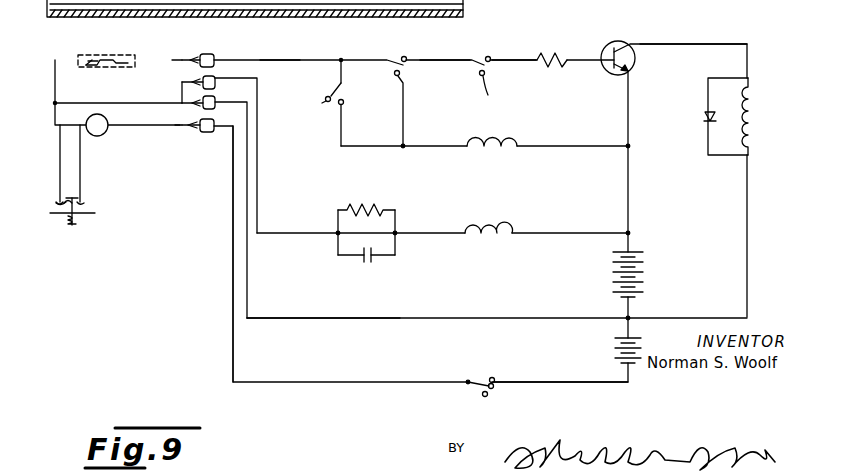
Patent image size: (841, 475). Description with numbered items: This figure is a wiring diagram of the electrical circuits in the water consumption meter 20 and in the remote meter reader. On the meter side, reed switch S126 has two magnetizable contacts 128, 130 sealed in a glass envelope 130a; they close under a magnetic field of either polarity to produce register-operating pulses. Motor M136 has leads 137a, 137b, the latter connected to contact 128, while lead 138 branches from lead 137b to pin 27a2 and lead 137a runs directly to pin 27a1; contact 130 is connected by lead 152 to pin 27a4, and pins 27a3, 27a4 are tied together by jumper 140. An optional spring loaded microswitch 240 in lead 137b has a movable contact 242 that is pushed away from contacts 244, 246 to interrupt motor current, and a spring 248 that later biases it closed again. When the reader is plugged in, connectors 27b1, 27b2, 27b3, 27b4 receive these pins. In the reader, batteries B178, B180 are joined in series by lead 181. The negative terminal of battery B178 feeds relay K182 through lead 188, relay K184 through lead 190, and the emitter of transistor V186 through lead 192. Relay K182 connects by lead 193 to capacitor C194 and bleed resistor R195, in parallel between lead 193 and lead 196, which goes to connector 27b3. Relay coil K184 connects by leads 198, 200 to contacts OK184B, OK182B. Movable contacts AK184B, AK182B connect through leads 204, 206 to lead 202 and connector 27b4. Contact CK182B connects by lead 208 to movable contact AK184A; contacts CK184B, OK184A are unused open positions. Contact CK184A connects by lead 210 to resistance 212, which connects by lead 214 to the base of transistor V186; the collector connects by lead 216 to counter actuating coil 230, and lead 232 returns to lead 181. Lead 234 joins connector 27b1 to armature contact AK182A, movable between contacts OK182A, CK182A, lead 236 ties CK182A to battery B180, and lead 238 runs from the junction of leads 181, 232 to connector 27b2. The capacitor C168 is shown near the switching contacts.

The reed switch S126 is at (104, 52).
The reed switch contact 130 is at (107, 73).
The glass envelope 130a is at (120, 52).
The reed switch contact 128 is at (90, 68).
The lead 152 is at (172, 58).
The motor lead 137b is at (53, 85).
The motor lead 137a is at (165, 128).
The lead 138 is at (62, 100).
The motor M136 is at (104, 135).
The water consumption meter 20 is at (91, 140).
The contact pin 27a4 is at (195, 58).
The pin receiving contact 27b4 is at (212, 56).
The contact pin 27a3 is at (190, 80).
The pin receiving contact 27b3 is at (215, 78).
The jumper 140 is at (181, 98).
The contact pin 27a2 is at (188, 106).
The pin receiving contact 27b2 is at (215, 103).
The contact pin 27a1 is at (196, 127).
The pin receiving contact 27b1 is at (206, 134).
The microswitch 240 is at (82, 224).
The movable contact 242 is at (60, 200).
The microswitch contact 244 is at (63, 205).
The microswitch contact 246 is at (82, 207).
The spring 248 is at (68, 222).
The lead 202 is at (265, 58).
The lead 204 is at (344, 68).
The lead 206 is at (348, 58).
The lead 208 is at (445, 58).
The lead 210 is at (500, 59).
The resistance 212 is at (563, 64).
The lead 214 is at (592, 50).
The lead 216 is at (695, 28).
The normally closed contact of relay K184 CK184B is at (330, 95).
The armature contact of relay K184 AK184B is at (322, 103).
The normally open contact of relay K184 OK184B is at (369, 123).
The normally closed contact of relay K182 CK182B is at (405, 56).
The armature contact of relay K182 AK182B is at (429, 73).
The normally open contact of relay K182 OK182B is at (404, 90).
The normally closed contact of relay K184 CK184A is at (489, 56).
The armature contact of relay K184 AK184A is at (512, 73).
The normally open contact of relay K184 OK184A is at (513, 91).
The capacitor C168 is at (506, 2).
The transistor V186 is at (613, 41).
The counter actuating coil 230 is at (758, 98).
The lead 232 is at (749, 230).
The lead 192 is at (630, 115).
The lead 190 is at (570, 145).
The relay K184 is at (484, 148).
The lead 200 is at (404, 127).
The lead 198 is at (352, 155).
The lead 196 is at (280, 245).
The bleed resistor R195 is at (373, 208).
The capacitor C194 is at (368, 264).
The lead 193 is at (420, 245).
The relay K182 is at (490, 236).
The lead 188 is at (560, 245).
The battery B178 is at (642, 278).
The lead 181 is at (632, 302).
The lead 238 is at (340, 325).
The lead 234 is at (230, 320).
The battery B180 is at (642, 350).
The lead 236 is at (542, 380).
The normally closed contact of relay K182 CK182A is at (494, 376).
The armature contact of relay K182 AK182A is at (496, 388).
The normally open contact of relay K182 OK182A is at (484, 396).